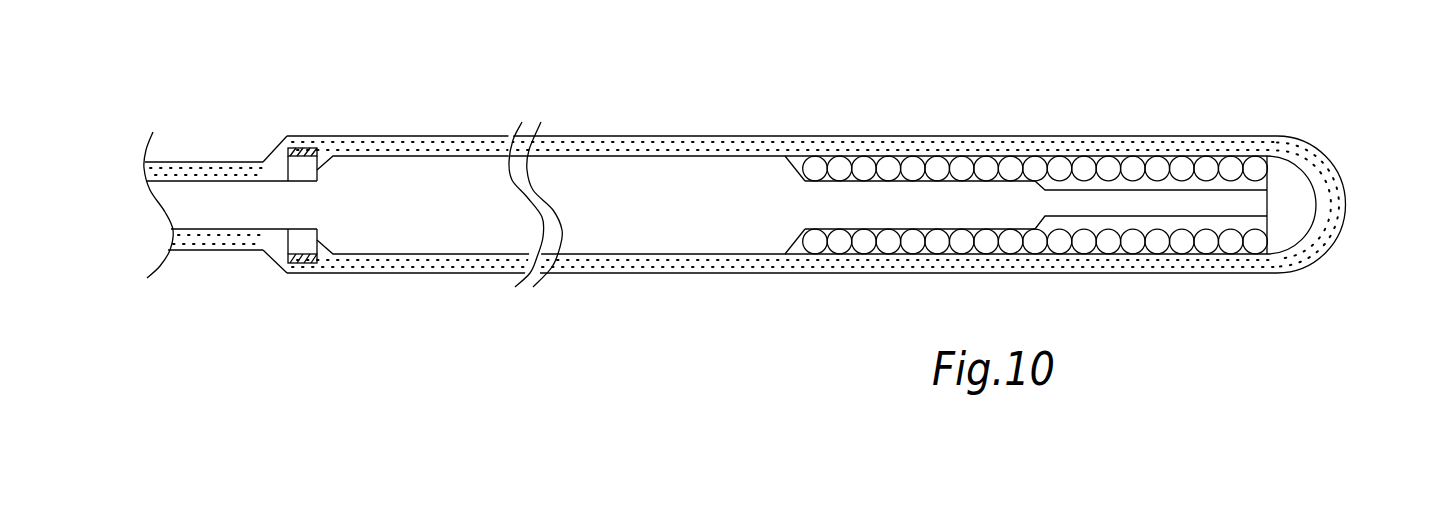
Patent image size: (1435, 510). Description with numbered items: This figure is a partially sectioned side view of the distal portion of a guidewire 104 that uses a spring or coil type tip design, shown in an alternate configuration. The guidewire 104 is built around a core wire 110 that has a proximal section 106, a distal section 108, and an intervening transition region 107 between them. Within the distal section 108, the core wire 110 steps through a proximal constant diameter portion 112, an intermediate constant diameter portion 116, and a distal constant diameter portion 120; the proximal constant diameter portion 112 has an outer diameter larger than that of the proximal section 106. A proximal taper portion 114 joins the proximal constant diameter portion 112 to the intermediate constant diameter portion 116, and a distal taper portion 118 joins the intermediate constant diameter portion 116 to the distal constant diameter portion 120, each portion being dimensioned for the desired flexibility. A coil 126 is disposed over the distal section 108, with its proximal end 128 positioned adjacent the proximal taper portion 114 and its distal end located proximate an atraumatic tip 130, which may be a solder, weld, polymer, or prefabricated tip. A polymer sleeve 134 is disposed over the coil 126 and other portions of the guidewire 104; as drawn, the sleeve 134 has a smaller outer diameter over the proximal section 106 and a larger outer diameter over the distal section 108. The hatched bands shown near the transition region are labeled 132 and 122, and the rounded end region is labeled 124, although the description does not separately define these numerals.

The guidewire 104 is at (824, 78).
The proximal section 106 is at (210, 122).
The transition region 107 is at (330, 243).
The distal section 108 is at (1140, 57).
The core wire 110 is at (483, 157).
The proximal constant diameter portion 112 is at (625, 235).
The proximal taper portion 114 is at (797, 252).
The intermediate constant diameter portion 116 is at (923, 208).
The distal taper portion 118 is at (1045, 188).
The distal constant diameter portion 120 is at (1125, 207).
The end plate 122 is at (1267, 210).
The rounded distal tip 124 is at (1307, 202).
The coil 126 is at (1013, 167).
The proximal end of the coil 128 is at (818, 165).
The atraumatic tip 130 is at (1255, 162).
The upper marker band 132 is at (300, 152).
The sleeve 134 is at (613, 145).